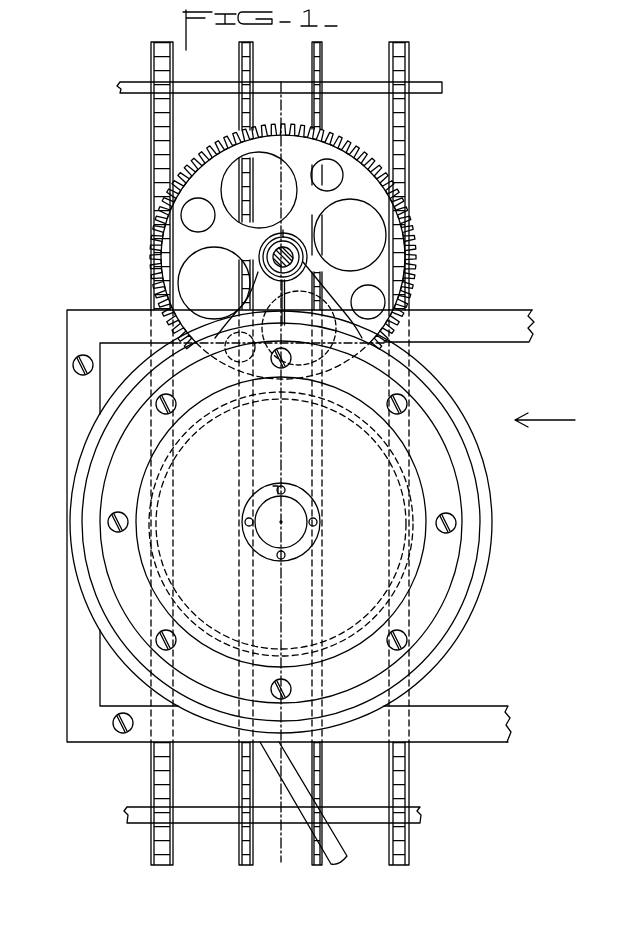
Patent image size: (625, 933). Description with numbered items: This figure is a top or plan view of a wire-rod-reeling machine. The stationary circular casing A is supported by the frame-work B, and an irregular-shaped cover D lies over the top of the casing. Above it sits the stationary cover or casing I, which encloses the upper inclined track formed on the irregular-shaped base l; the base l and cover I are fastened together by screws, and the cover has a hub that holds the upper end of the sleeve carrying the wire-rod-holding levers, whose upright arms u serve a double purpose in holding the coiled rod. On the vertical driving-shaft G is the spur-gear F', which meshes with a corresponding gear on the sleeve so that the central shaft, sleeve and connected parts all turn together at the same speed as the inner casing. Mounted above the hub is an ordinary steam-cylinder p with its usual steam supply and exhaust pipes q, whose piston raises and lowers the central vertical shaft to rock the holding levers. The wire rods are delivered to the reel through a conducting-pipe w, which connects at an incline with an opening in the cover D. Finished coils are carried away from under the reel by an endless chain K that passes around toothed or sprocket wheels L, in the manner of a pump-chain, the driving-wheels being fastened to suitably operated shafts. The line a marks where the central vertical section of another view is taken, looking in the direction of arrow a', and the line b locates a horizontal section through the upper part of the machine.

The stationary circular casing A is at (491, 556).
The frame-work B is at (115, 313).
The cover D is at (479, 508).
The spur-gear F' is at (283, 244).
The vertical driving-shaft G is at (307, 258).
The cover or casing I is at (180, 553).
The endless chain K is at (158, 138).
The sprocket wheels L is at (240, 100).
The section line a is at (280, 463).
The arrow a' is at (545, 414).
The section line b is at (288, 558).
The base l is at (449, 603).
The steam-cylinder p is at (292, 517).
The steam supply and exhaust pipes q is at (284, 488).
The upright arms u is at (457, 524).
The conducting-pipe w is at (340, 852).